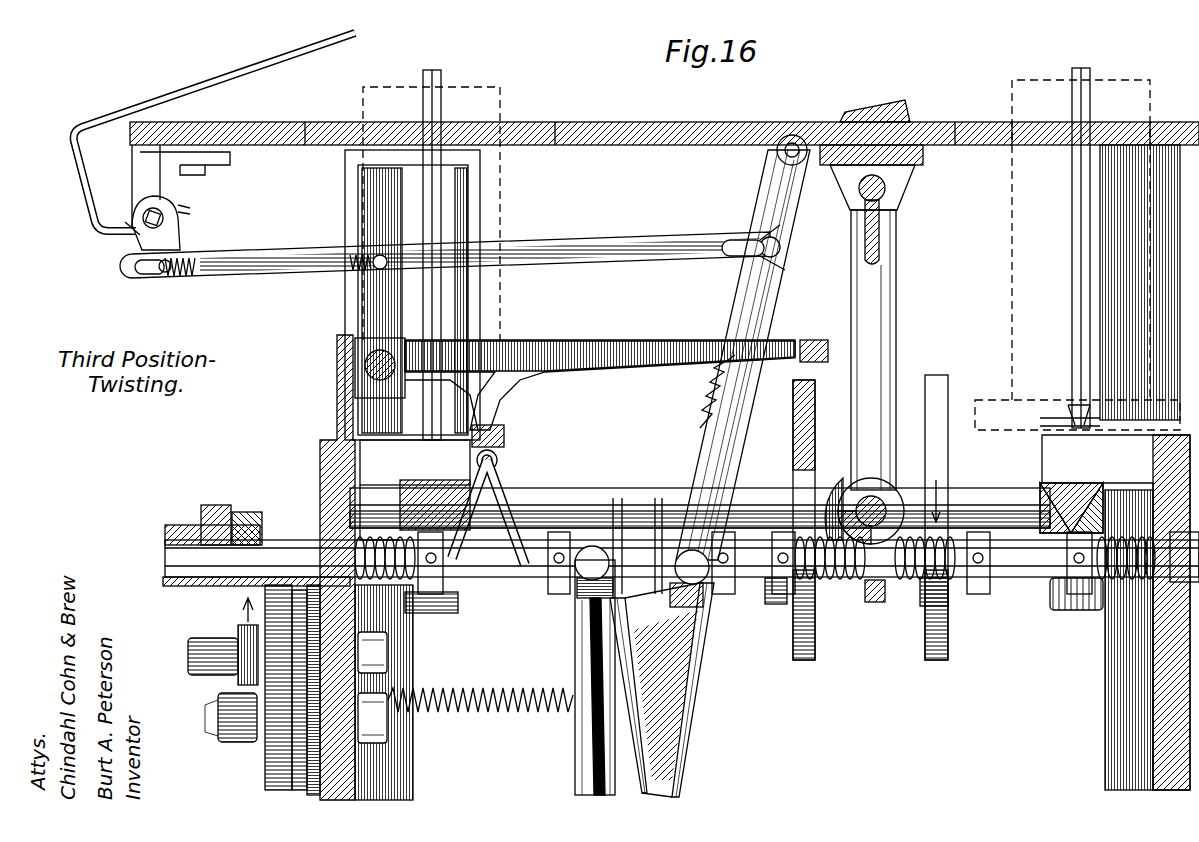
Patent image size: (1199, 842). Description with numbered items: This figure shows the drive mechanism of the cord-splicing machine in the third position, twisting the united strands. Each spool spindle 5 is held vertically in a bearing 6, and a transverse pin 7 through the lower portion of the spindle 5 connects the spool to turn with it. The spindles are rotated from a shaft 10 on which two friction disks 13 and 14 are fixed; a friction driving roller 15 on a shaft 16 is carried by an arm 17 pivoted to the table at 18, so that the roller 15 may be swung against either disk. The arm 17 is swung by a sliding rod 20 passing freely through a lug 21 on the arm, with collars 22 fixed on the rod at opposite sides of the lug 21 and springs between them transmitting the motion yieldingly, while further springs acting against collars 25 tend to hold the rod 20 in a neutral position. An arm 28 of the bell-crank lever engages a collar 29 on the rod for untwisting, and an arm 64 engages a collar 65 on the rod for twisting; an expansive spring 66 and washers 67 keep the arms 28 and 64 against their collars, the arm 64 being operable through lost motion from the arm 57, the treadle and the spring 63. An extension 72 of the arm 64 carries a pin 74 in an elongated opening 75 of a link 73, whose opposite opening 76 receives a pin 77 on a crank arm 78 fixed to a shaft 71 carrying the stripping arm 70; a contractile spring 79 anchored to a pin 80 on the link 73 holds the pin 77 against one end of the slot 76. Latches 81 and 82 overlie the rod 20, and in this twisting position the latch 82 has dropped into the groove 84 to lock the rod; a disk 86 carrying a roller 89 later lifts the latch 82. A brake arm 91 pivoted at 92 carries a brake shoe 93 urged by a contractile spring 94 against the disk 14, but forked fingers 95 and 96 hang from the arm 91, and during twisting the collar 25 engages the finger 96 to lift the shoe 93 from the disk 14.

The spindle 5 is at (443, 76).
The bearing 6 is at (440, 462).
The transverse pin 7 is at (1052, 418).
The shaft 10 is at (567, 490).
The friction disk 13 is at (940, 660).
The friction disk 14 is at (800, 660).
The friction driving roller 15 is at (836, 480).
The shaft 16 is at (905, 495).
The arm or bracket 17 is at (893, 288).
The pivot 18 is at (885, 192).
The rod 20 is at (178, 586).
The lug 21 is at (870, 602).
The collars 22 is at (965, 606).
The collars 25 is at (432, 613).
The arm 28 is at (575, 752).
The collar 29 is at (556, 594).
The arm 57 is at (728, 305).
The spring 63 is at (458, 715).
The arm 64 is at (680, 716).
The collar 65 is at (712, 588).
The expansive spring 66 is at (605, 548).
The washers 67 is at (617, 520).
The arm 70 is at (250, 67).
The shaft 71 is at (128, 232).
The extension 72 is at (775, 302).
The link 73 is at (570, 242).
The pin 74 is at (762, 238).
The elongated opening 75 is at (738, 240).
The elongated opening 76 is at (125, 282).
The pin 77 is at (155, 280).
The crank arm 78 is at (180, 236).
The contractile spring 79 is at (195, 280).
The pin 80 is at (383, 254).
The latch 81 is at (208, 506).
The latch 82 is at (250, 512).
The groove 84 is at (240, 580).
The disk 86 is at (264, 785).
The roller 89 is at (236, 630).
The brake arm 91 is at (590, 340).
The pivot 92 is at (405, 335).
The brake shoe 93 is at (822, 364).
The contractile spring 94 is at (698, 428).
The forked finger 95 is at (505, 490).
The forked finger 96 is at (498, 462).